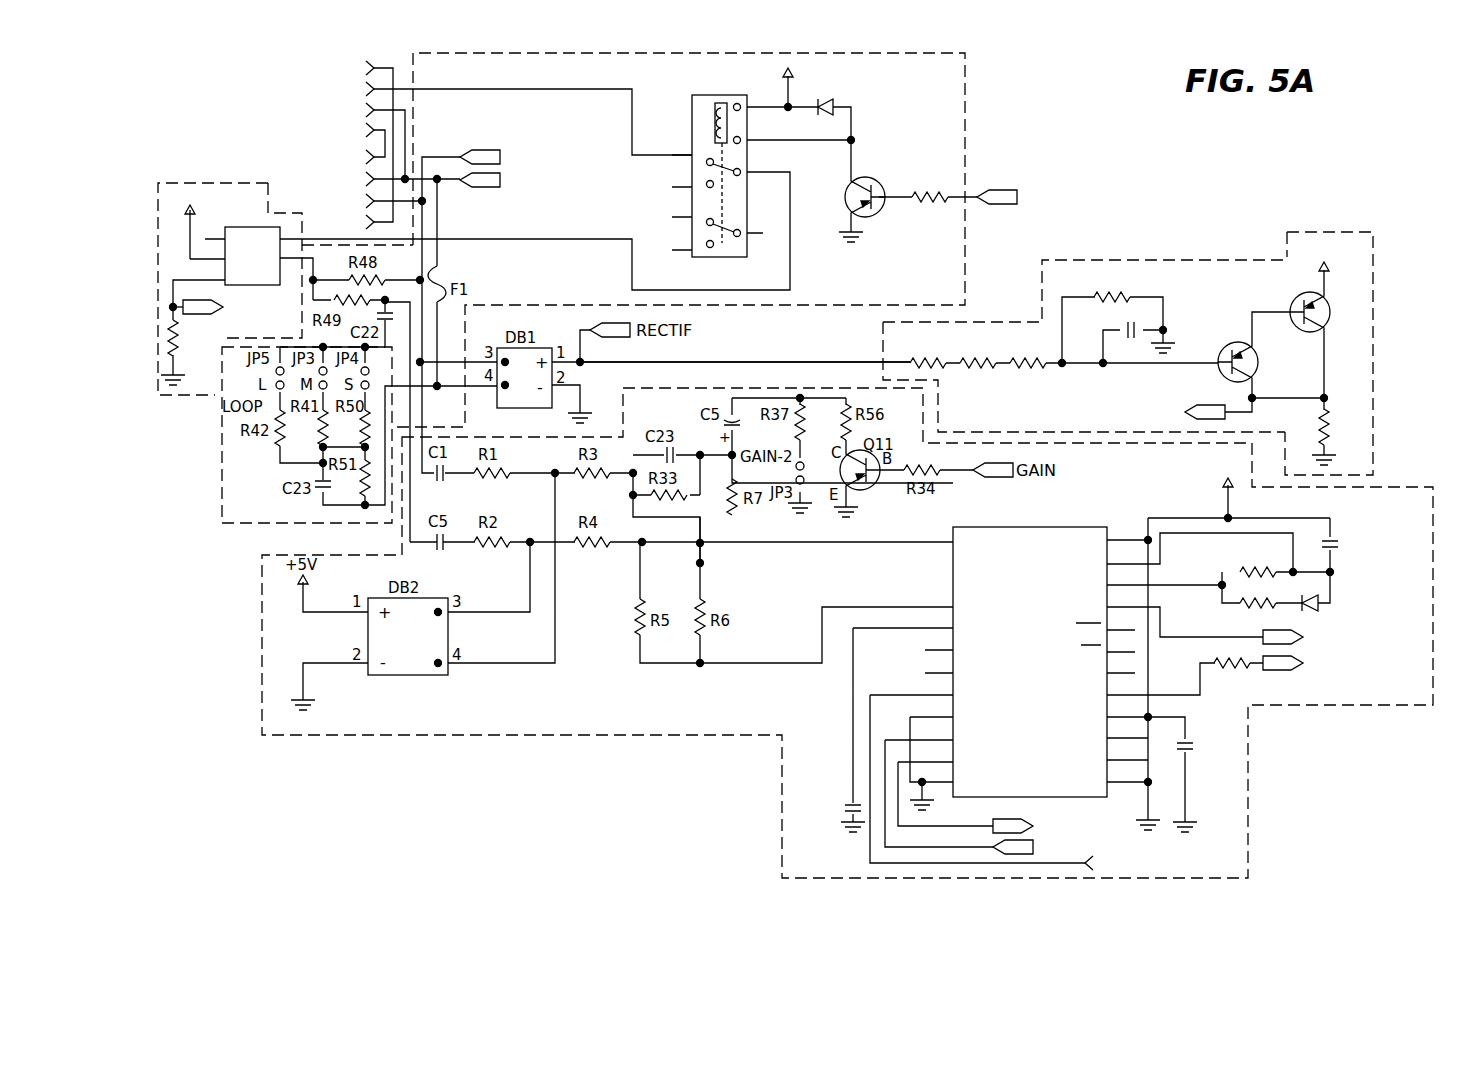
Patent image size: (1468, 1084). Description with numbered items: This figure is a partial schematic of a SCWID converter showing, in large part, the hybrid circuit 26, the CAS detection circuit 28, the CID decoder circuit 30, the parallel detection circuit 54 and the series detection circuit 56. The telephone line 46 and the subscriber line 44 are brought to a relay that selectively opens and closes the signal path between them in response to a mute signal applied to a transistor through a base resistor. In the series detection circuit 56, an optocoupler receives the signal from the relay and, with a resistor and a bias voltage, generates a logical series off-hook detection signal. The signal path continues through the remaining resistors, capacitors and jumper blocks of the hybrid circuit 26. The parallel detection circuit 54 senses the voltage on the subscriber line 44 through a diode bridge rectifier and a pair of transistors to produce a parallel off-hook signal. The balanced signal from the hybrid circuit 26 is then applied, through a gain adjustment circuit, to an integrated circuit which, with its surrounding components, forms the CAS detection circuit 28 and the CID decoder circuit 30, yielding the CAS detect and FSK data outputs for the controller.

The telephone line 46 is at (297, 78).
The subscriber line 44 is at (298, 170).
The series detection circuit 56 is at (198, 180).
The hybrid circuit 26 is at (796, 310).
The parallel detection circuit 54 is at (1318, 232).
The CAS detection circuit 28 is at (1248, 768).
The CID decoder circuit 30 is at (1133, 651).